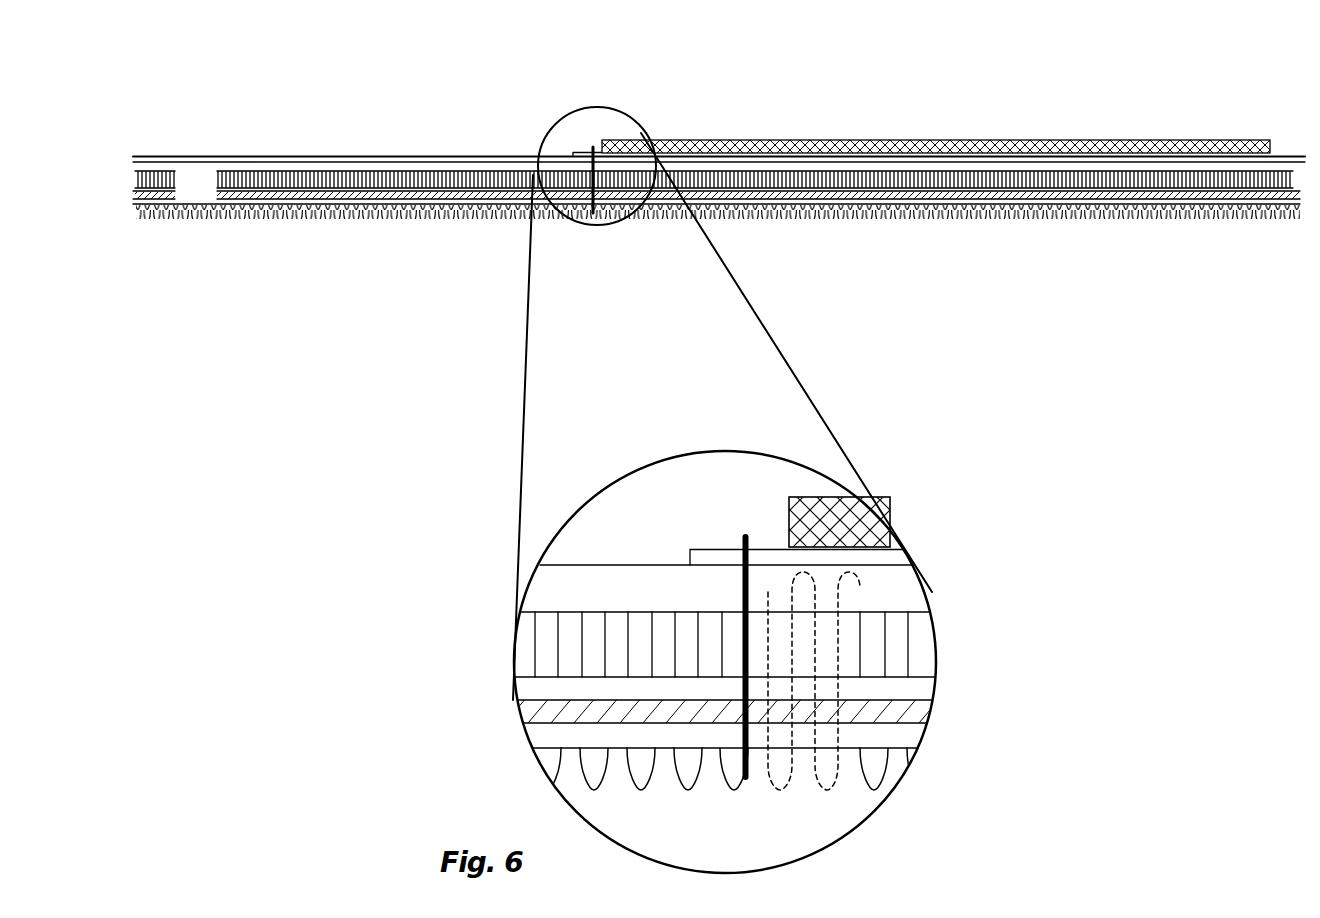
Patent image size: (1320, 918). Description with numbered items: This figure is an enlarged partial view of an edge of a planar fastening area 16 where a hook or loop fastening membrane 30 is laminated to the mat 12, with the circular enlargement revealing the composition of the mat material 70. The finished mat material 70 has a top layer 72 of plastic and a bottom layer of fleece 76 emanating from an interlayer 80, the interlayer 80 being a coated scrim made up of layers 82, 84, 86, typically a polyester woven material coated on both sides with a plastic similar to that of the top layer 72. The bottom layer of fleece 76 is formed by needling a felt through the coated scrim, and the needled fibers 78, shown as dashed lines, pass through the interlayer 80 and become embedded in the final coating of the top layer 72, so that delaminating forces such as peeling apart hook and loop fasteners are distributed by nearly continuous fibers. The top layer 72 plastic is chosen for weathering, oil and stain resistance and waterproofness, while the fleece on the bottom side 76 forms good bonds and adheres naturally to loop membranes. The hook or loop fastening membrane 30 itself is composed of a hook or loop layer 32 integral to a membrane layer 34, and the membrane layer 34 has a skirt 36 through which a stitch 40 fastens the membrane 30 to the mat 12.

The mat 12 is at (385, 148).
The planar fastening area 16 is at (588, 100).
The hook or loop fastening membrane 30 is at (1003, 403).
The hook or loop layer 32 is at (855, 528).
The membrane layer 34 is at (877, 558).
The skirt 36 is at (700, 563).
The stitch 40 is at (750, 567).
The mat material 70 is at (714, 183).
The top layer 72 is at (566, 584).
The bottom layer of fleece 76 is at (872, 773).
The needled fibers 78 is at (860, 590).
The interlayer 80 is at (1120, 695).
The coated scrim layer 82 is at (920, 717).
The coated scrim layer 84 is at (918, 691).
The coated scrim layer 86 is at (912, 738).